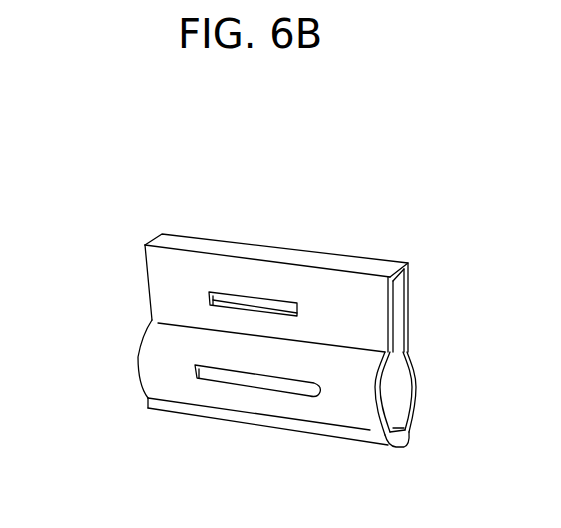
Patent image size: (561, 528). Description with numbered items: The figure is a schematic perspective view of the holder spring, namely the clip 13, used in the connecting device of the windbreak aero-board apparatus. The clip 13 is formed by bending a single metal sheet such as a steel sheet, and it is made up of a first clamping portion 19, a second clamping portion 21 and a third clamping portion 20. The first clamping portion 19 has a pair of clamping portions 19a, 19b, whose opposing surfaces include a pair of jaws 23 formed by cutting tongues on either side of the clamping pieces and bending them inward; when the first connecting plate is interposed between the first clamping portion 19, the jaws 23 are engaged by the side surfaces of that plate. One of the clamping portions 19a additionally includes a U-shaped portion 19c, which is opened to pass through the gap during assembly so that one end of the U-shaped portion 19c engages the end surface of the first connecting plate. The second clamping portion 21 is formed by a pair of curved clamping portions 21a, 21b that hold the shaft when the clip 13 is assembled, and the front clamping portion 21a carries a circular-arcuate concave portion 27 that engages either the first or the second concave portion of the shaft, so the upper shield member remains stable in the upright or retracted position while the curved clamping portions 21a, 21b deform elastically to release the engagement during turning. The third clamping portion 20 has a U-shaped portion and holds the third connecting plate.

The clip 13 is at (365, 243).
The first clamping portion 19 is at (145, 277).
The clamping portion 19a is at (396, 340).
The clamping portion 19b is at (405, 307).
The U-shaped portion 19c is at (310, 248).
The third clamping portion 20 is at (400, 443).
The second clamping portion 21 is at (417, 392).
The clamping portion 21a is at (378, 403).
The clamping portion 21b is at (417, 420).
The jaws 23 is at (246, 296).
The circular-arcuate concave portion 27 is at (252, 384).